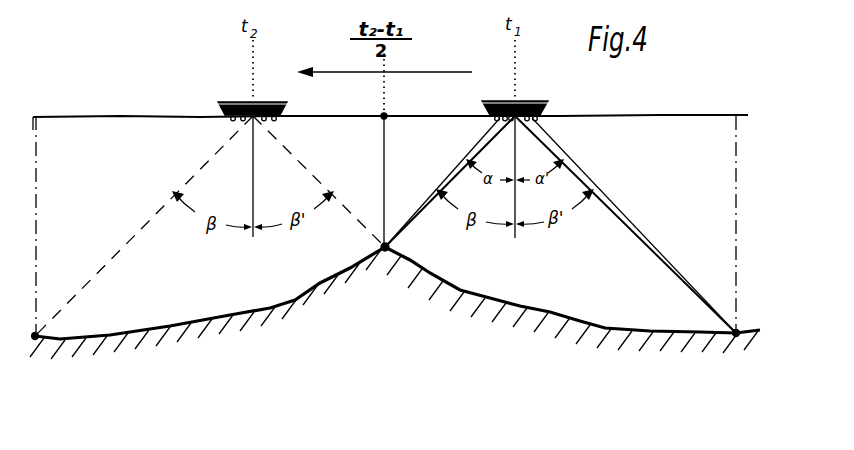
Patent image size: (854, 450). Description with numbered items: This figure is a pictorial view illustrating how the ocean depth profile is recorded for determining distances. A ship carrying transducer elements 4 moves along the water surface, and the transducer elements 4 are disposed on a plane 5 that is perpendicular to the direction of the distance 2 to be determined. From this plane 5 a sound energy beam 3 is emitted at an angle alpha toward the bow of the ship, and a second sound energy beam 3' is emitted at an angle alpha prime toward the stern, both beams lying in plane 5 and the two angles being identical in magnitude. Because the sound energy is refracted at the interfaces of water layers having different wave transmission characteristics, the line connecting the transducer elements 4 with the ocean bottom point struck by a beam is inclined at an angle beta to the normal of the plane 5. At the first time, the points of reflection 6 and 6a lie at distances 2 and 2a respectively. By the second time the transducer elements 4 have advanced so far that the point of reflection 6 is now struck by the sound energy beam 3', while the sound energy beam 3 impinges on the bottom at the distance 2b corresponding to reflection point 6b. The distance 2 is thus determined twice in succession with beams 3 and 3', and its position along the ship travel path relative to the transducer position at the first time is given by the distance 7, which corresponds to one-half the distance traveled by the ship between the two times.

The distance 2 is at (386, 165).
The distance 2a is at (735, 193).
The distance 2b is at (38, 212).
The sound energy beam 3 is at (275, 226).
The sound energy beam 3' is at (625, 224).
The transducer elements 4 is at (231, 119).
The plane 5 is at (188, 116).
The point of reflection 6 is at (378, 253).
The point of reflection 6a is at (735, 328).
The point of reflection 6b is at (40, 335).
The distance 7 is at (398, 116).